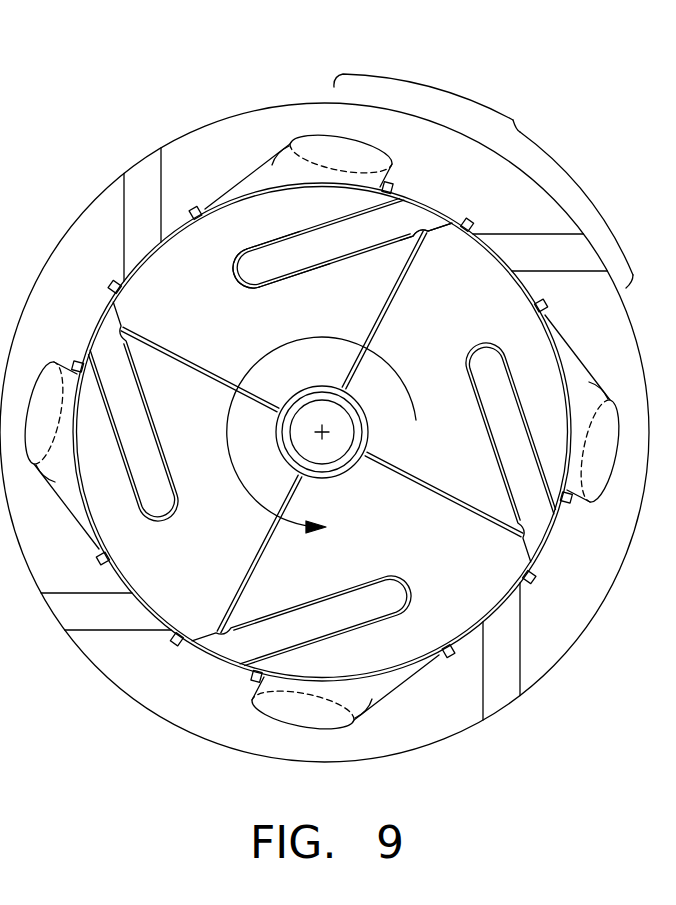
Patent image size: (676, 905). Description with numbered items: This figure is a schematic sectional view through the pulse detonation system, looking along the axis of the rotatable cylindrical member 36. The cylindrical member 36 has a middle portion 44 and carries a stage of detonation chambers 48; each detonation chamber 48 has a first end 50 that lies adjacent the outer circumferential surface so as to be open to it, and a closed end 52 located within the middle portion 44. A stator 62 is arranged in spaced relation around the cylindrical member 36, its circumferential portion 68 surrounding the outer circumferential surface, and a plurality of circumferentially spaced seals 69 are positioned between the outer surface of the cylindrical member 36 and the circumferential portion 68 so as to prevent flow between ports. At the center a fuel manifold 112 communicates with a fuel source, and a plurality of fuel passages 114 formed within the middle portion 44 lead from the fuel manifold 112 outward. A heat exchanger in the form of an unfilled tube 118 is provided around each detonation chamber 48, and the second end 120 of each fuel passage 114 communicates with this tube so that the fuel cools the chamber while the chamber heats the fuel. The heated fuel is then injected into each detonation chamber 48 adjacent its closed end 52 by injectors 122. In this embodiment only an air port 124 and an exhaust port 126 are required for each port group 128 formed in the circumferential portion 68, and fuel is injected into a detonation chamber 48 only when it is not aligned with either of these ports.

The rotatable cylindrical member 36 is at (182, 230).
The middle portion 44 is at (541, 323).
The detonation chamber 48 is at (303, 231).
The first end 50 is at (424, 203).
The closed end 52 is at (233, 265).
The stator 62 is at (395, 110).
The circumferential portion 68 is at (518, 177).
The seal 69 is at (476, 221).
The fuel manifold 112 is at (360, 432).
The fuel passage 114 is at (383, 316).
The unfilled tube 118 is at (317, 267).
The second end 120 is at (414, 239).
The injector 122 is at (233, 275).
The air port 124 is at (612, 236).
The exhaust port 126 is at (290, 143).
The port group 128 is at (518, 120).